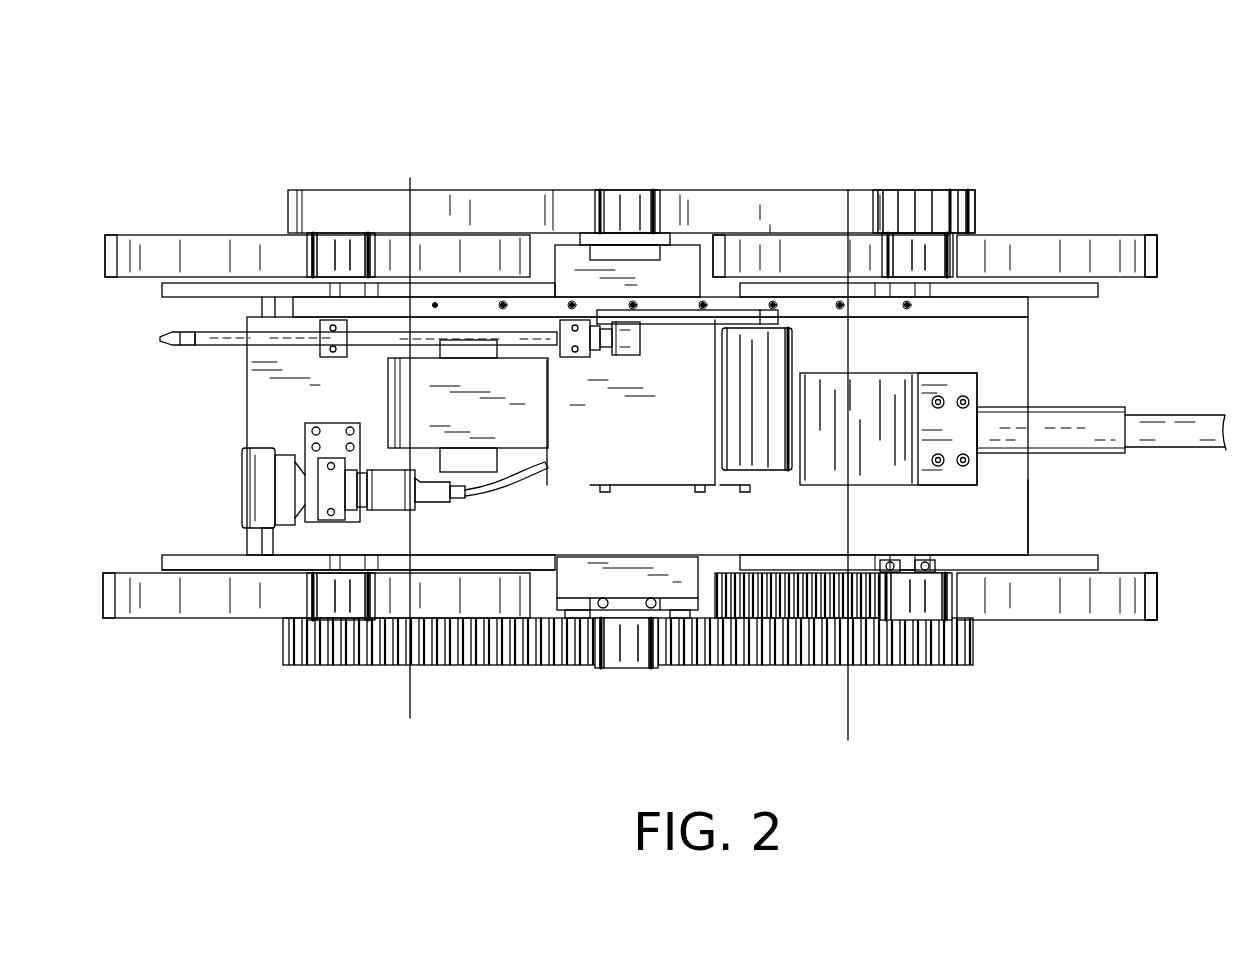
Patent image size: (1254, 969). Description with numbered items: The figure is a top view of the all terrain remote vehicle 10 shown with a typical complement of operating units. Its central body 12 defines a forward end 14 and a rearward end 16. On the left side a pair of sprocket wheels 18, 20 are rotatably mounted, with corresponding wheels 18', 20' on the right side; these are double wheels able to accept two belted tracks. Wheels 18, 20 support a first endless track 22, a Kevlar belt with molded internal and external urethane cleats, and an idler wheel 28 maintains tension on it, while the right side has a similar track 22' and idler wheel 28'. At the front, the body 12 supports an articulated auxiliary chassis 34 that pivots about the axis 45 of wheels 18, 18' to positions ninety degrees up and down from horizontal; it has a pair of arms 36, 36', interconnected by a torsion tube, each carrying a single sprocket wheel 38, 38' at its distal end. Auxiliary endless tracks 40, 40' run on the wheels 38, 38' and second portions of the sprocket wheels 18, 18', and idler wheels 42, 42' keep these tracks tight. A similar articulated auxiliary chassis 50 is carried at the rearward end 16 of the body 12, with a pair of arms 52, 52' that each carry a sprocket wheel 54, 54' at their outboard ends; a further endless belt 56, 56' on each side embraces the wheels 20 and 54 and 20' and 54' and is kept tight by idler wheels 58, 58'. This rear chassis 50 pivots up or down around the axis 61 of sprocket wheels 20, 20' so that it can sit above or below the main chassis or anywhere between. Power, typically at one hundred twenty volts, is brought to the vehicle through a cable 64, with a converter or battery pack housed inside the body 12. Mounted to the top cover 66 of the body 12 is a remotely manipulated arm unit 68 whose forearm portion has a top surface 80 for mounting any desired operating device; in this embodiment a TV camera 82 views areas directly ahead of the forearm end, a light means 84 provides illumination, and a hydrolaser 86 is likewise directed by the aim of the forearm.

The all terrain remote vehicle 10 is at (1010, 85).
The central body 12 is at (1032, 344).
The forward end 14 is at (255, 545).
The rearward end 16 is at (1030, 498).
The sprocket wheel 18 is at (628, 680).
The sprocket wheel 18' is at (631, 150).
The sprocket wheel 20 is at (832, 644).
The sprocket wheel 20' is at (831, 198).
The first endless track 22 is at (628, 680).
The endless track 22' is at (631, 154).
The idler wheel 28 is at (627, 649).
The idler wheel 28' is at (604, 181).
The articulated auxiliary chassis 34 is at (205, 575).
The arm 36 is at (323, 541).
The arm 36' is at (397, 309).
The sprocket wheel 38 is at (316, 625).
The sprocket wheel 38' is at (317, 202).
The auxiliary endless track 40 is at (322, 634).
The auxiliary endless track 40' is at (323, 202).
The idler wheel 42 is at (340, 640).
The idler wheel 42' is at (341, 198).
The axis 45 is at (410, 700).
The articulated auxiliary chassis 50 is at (1085, 553).
The arm 52 is at (969, 548).
The arm 52' is at (971, 296).
The sprocket wheel 54 is at (1057, 637).
The sprocket wheel 54' is at (1057, 198).
The endless belt 56 is at (1161, 637).
The endless belt 56' is at (1178, 223).
The idler wheel 58 is at (954, 616).
The idler wheel 58' is at (928, 198).
The axis 61 is at (848, 685).
The cable 64 is at (1182, 413).
The top cover 66 is at (573, 526).
The remotely manipulated arm unit 68 is at (243, 398).
The top surface 80 is at (664, 416).
The TV camera 82 is at (383, 395).
The light means 84 is at (238, 482).
The hydrolaser 86 is at (226, 350).